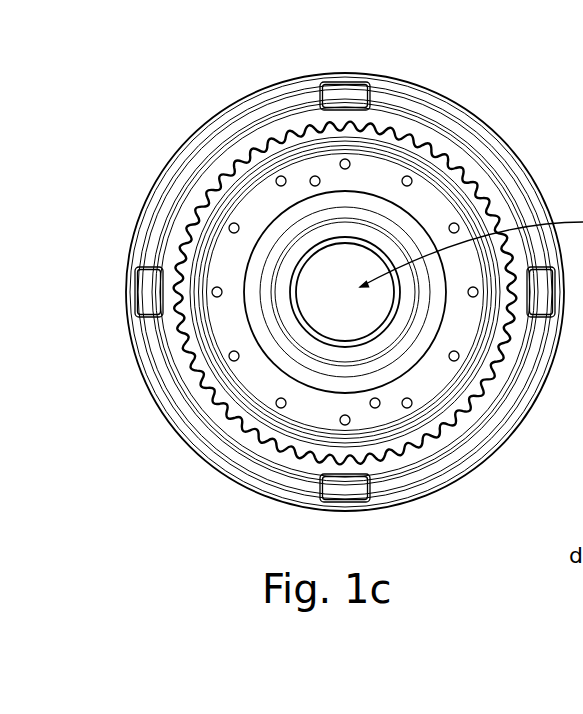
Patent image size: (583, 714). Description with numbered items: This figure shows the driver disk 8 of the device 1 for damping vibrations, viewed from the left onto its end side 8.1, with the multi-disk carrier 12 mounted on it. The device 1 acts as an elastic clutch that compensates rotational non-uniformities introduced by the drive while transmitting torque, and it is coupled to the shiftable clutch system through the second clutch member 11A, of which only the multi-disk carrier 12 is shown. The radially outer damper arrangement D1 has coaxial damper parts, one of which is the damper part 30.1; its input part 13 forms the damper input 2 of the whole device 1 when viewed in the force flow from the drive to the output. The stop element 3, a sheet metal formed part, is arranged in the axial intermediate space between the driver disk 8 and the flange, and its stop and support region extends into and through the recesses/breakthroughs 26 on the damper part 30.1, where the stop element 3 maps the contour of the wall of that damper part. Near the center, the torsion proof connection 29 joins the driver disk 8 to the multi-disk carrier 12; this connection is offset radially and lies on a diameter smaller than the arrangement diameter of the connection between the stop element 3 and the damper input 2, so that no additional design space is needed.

The device for damping vibrations 1 is at (494, 97).
The damper input 2 is at (495, 158).
The stop element 3 is at (332, 96).
The driver disk 8 is at (172, 170).
The end side of the driver disk 8.1 is at (230, 140).
The input part of the damper arrangement 13 is at (311, 292).
The damper part 30.1 is at (306, 286).
The damper arrangement D1 is at (152, 254).
The multi-disk carrier 12 is at (295, 351).
The second clutch member 11A is at (265, 368).
The torsion proof connection 29 is at (460, 356).
The recesses/breakthroughs 26 is at (372, 490).